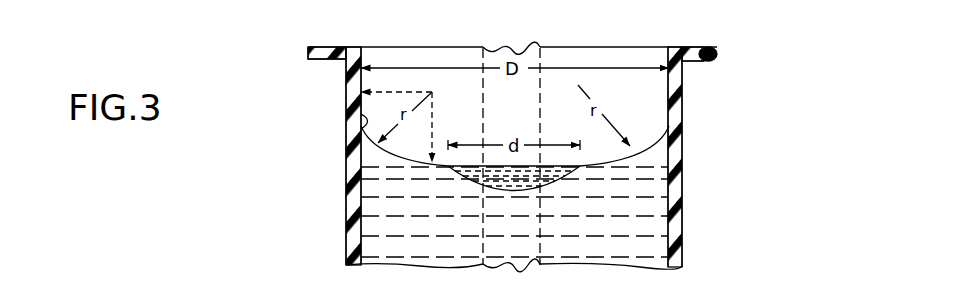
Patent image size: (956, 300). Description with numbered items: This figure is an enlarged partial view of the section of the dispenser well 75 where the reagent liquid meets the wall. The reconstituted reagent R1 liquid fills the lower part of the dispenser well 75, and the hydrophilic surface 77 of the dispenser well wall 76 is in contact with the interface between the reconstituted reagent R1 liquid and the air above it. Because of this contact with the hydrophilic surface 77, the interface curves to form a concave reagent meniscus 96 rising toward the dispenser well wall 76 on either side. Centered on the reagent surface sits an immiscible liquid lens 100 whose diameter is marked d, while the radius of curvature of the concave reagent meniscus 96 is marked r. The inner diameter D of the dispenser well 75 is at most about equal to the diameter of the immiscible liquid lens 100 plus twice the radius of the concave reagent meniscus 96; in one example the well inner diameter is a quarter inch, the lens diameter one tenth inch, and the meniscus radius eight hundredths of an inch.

The dispenser well 75 is at (689, 72).
The dispenser well wall 76 is at (683, 201).
The hydrophilic surface 77 is at (667, 127).
The concave reagent meniscus 96 is at (346, 113).
The immiscible liquid lens 100 is at (547, 184).
The reconstituted reagent liquid R1 is at (433, 246).